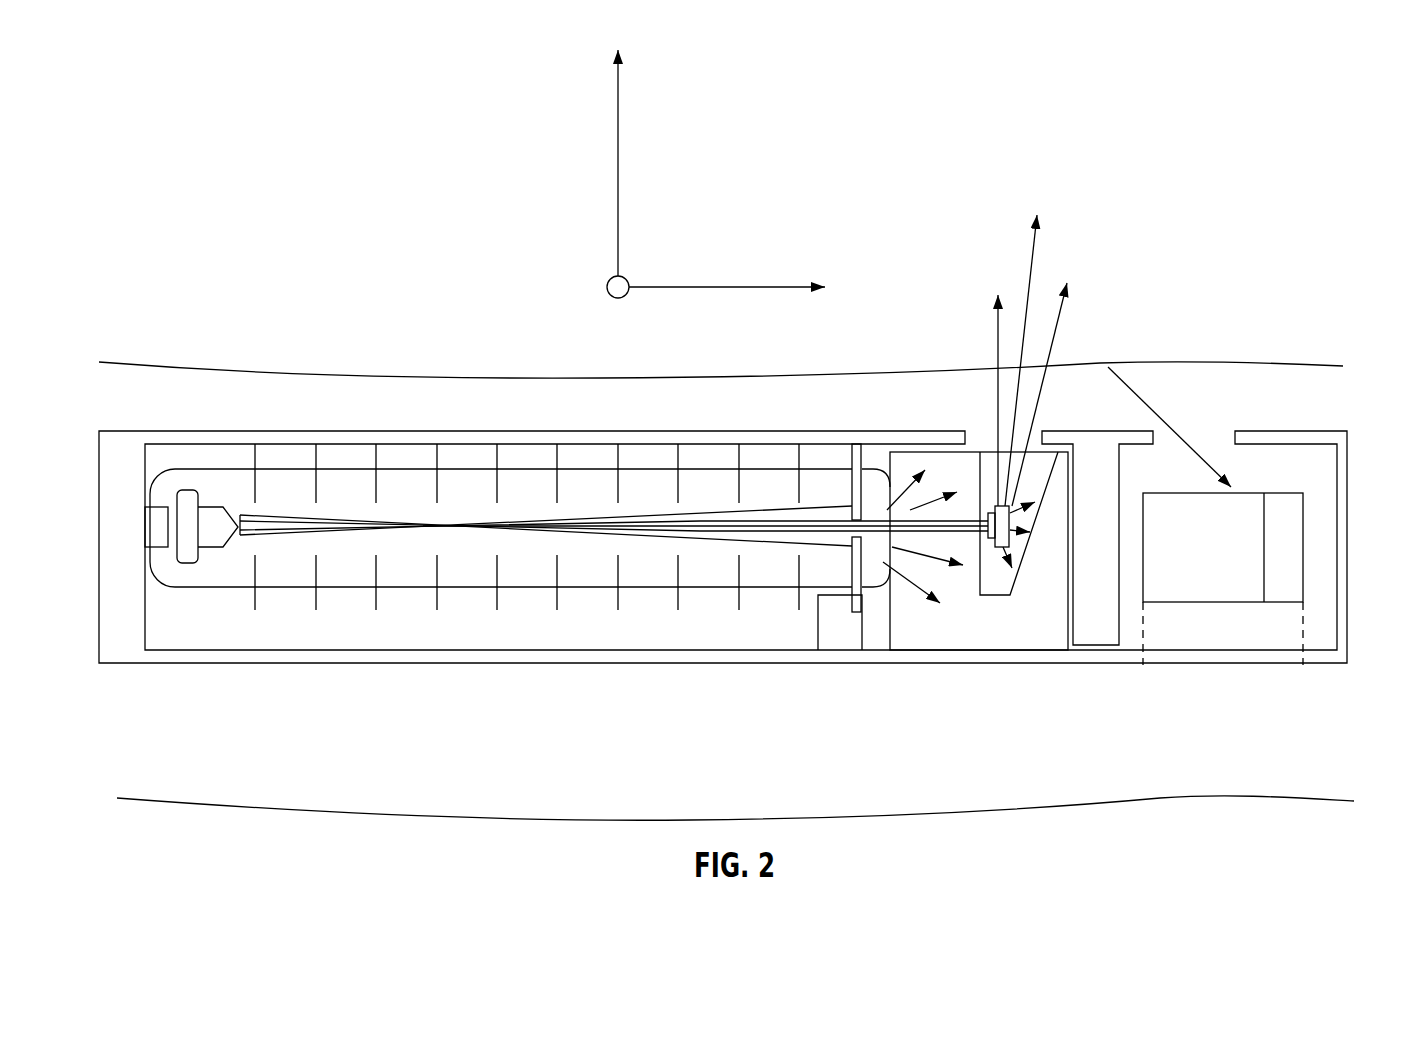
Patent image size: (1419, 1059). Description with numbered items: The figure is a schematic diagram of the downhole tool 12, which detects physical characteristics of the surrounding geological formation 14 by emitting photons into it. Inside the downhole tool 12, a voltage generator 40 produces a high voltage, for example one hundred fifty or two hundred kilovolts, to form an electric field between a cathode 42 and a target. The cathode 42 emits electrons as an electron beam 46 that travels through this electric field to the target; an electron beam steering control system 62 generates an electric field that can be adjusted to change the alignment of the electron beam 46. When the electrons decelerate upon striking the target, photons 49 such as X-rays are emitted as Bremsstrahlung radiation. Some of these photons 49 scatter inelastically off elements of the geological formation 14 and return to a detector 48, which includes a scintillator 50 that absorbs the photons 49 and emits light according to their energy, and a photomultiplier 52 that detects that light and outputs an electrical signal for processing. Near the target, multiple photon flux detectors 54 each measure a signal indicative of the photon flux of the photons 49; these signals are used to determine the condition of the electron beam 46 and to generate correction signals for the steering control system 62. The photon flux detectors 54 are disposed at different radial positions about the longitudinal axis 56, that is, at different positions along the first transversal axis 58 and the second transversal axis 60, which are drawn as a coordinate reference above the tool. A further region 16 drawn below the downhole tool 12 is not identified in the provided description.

The downhole tool 12 is at (226, 431).
The geological formation 14 is at (145, 354).
The vehicle interior 16 is at (255, 697).
The voltage generator 40 is at (157, 532).
The cathode 42 is at (232, 514).
The electron beam 46 is at (608, 513).
The detector 48 is at (1303, 673).
The photons 49 is at (1014, 274).
The scintillator 50 is at (1188, 503).
The photomultiplier 52 is at (1295, 527).
The photon flux detectors 54 is at (1003, 562).
The longitudinal axis 56 is at (722, 287).
The first transversal axis 58 is at (620, 168).
The second transversal axis 60 is at (625, 278).
The electron beam steering control system 62 is at (187, 565).